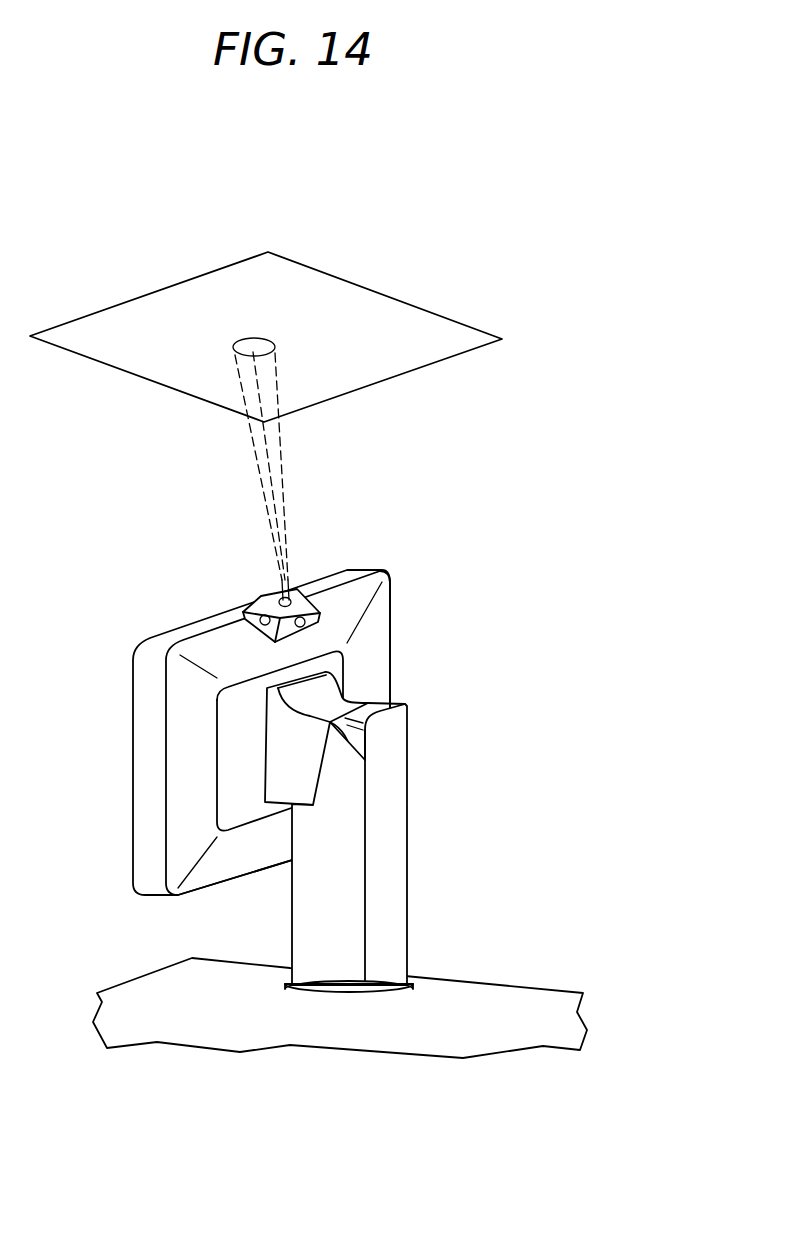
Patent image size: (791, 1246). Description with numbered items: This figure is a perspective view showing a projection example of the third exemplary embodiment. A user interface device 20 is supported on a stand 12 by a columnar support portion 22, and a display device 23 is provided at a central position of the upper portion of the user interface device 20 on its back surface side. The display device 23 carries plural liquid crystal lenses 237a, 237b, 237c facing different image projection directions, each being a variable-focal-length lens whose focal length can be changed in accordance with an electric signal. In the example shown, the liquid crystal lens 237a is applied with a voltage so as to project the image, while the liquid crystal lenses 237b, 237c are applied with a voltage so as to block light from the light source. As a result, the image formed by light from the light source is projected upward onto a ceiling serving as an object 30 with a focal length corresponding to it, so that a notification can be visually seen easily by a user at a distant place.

The stand 12 is at (192, 1018).
The user interface device 20 is at (145, 832).
The columnar support portion 22 is at (392, 845).
The display device 23 is at (262, 592).
The liquid crystal lens 237a is at (290, 592).
The liquid crystal lens 237b is at (307, 618).
The liquid crystal lens 237c is at (243, 605).
The object 30 is at (393, 358).